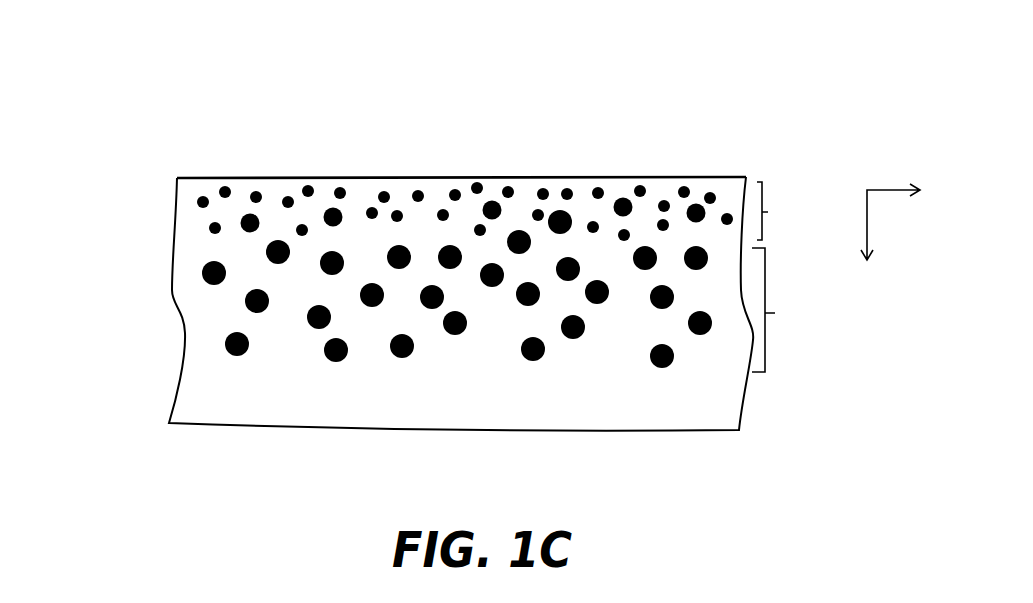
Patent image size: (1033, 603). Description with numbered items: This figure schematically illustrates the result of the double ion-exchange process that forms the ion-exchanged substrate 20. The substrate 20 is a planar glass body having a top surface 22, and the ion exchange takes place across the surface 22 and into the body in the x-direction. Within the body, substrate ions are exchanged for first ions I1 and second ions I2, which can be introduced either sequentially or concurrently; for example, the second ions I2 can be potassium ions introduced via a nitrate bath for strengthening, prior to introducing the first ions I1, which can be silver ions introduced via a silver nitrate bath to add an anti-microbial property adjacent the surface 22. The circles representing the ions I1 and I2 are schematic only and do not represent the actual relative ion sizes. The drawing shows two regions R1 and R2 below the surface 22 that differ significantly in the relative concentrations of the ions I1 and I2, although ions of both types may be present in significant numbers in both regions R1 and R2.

The ion-exchanged substrate 20 is at (490, 224).
The surface 22 is at (188, 178).
The first ions I1 is at (203, 202).
The second ions I2 is at (203, 272).
The first region R1 is at (790, 211).
The second region R2 is at (787, 310).